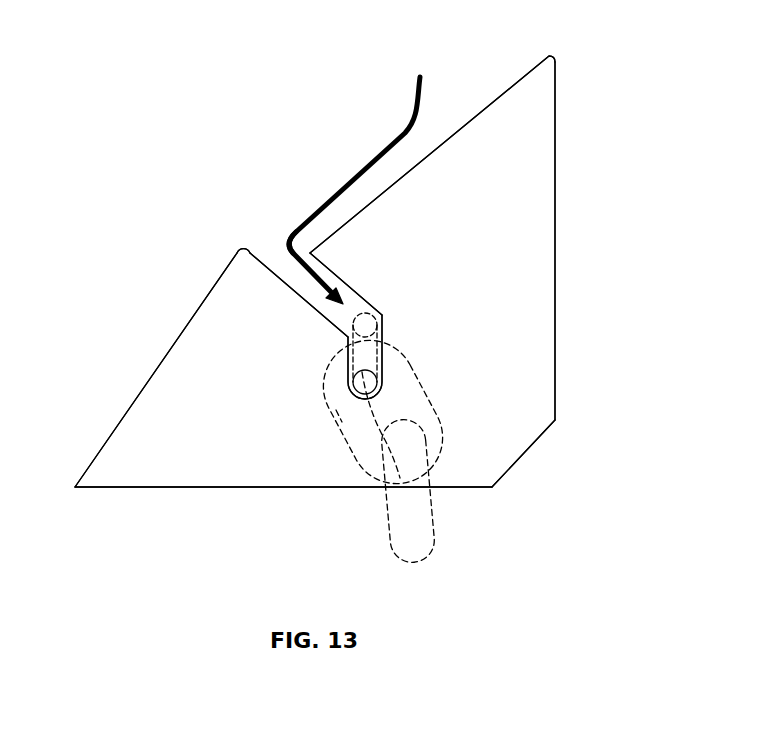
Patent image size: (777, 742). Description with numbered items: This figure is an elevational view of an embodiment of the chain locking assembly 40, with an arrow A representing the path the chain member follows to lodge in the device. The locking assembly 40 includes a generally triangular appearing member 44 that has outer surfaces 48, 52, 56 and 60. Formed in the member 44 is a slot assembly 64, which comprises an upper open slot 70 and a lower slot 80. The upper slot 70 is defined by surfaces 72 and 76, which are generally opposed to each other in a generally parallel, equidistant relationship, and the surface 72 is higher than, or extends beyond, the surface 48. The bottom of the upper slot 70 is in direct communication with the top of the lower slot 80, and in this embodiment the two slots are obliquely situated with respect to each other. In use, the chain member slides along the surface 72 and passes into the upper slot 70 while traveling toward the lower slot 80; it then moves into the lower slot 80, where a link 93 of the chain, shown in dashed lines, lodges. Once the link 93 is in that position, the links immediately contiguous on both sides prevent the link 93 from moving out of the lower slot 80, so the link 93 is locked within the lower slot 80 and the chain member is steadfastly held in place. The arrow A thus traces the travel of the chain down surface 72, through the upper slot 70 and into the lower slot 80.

The locking assembly 40 is at (142, 197).
The generally triangular appearing member 44 is at (188, 455).
The surface 48 is at (497, 98).
The surface 52 is at (155, 370).
The surface 56 is at (462, 488).
The surface 60 is at (557, 243).
The slot assembly 64 is at (279, 261).
The upper slot 70 is at (323, 297).
The surface 72 is at (233, 252).
The surface 76 is at (341, 287).
The lower slot 80 is at (383, 330).
The link 93 is at (372, 323).
The arrow A is at (387, 147).